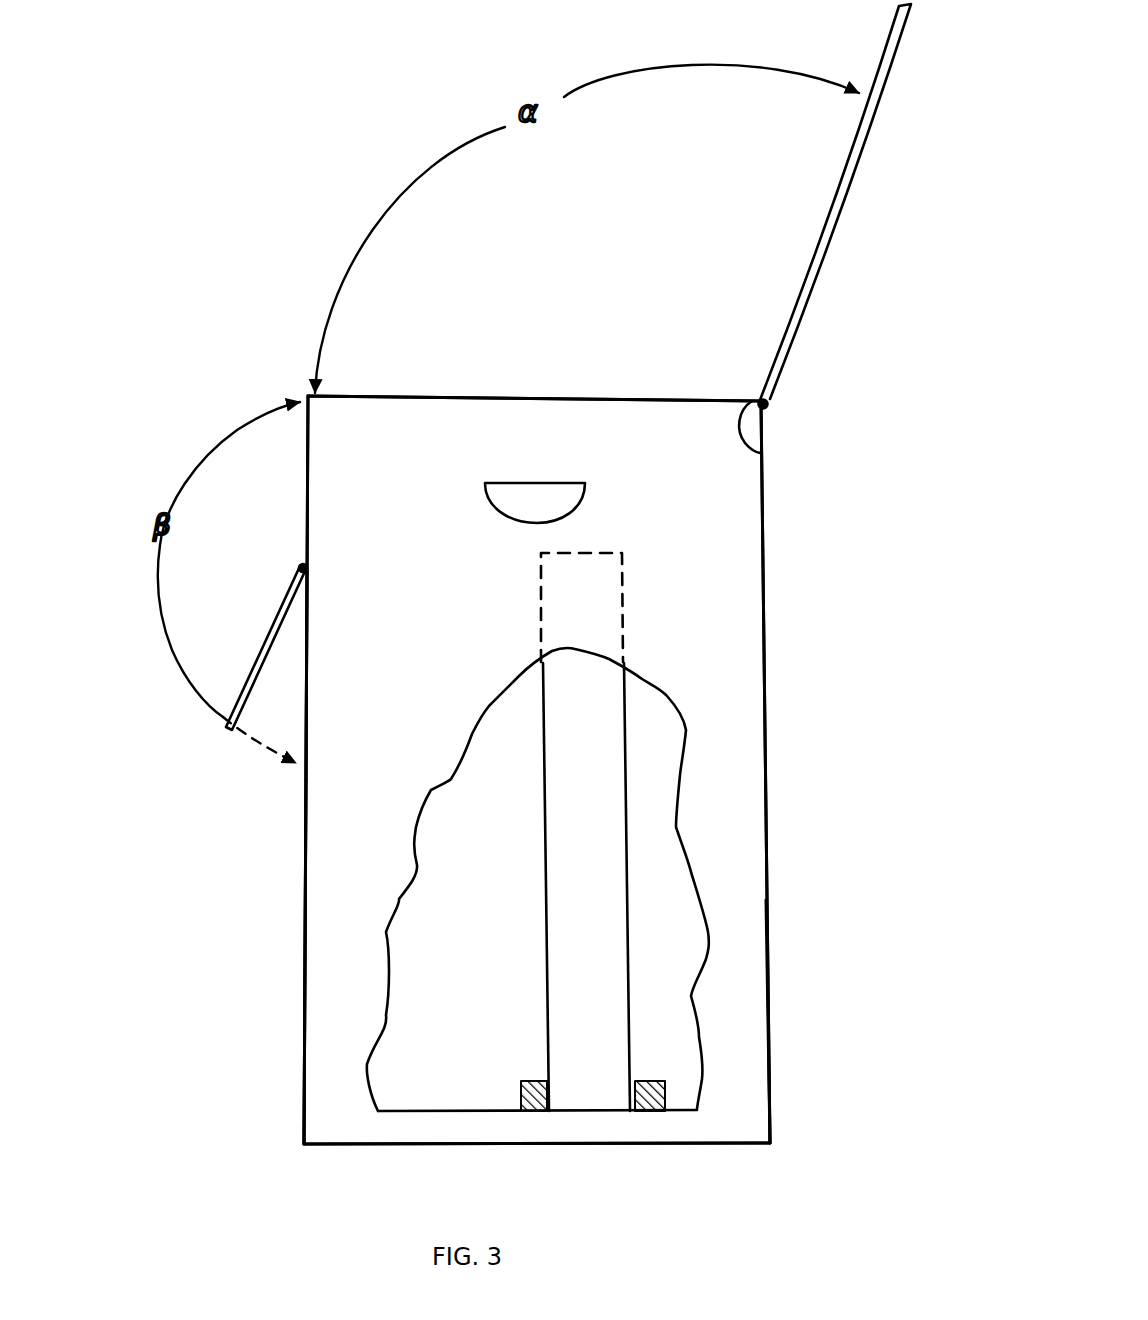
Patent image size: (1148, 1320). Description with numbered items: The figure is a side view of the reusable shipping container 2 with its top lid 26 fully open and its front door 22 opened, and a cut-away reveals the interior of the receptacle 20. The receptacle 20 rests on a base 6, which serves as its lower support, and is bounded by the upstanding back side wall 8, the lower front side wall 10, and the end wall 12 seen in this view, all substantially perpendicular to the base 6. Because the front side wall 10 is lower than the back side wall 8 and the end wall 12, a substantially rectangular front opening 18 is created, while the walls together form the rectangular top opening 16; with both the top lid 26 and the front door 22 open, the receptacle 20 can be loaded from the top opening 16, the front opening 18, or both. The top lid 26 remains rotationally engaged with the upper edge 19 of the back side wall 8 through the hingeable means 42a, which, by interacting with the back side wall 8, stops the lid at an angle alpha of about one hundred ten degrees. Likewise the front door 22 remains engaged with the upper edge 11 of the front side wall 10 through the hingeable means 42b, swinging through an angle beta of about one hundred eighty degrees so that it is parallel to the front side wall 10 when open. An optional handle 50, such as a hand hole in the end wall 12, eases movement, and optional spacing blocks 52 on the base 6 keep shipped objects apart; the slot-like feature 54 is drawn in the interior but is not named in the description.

The reusable shipping container 2 is at (160, 189).
The base 6 is at (548, 1144).
The back side wall 8 is at (770, 1005).
The front side wall 10 is at (303, 965).
The upper edge of front sidewall 11 is at (305, 572).
The end wall 12 is at (340, 860).
The top opening 16 is at (544, 370).
The front opening 18 is at (300, 485).
The upper edge of back sidewall 19 is at (758, 453).
The receptacle 20 is at (783, 752).
The front door 22 is at (252, 652).
The top lid 26 is at (832, 221).
The hingeable means 42a is at (766, 406).
The hingeable means 42b is at (305, 568).
The handle 50 is at (583, 502).
The spacing block 52 is at (520, 1099).
The channel 54 is at (571, 852).